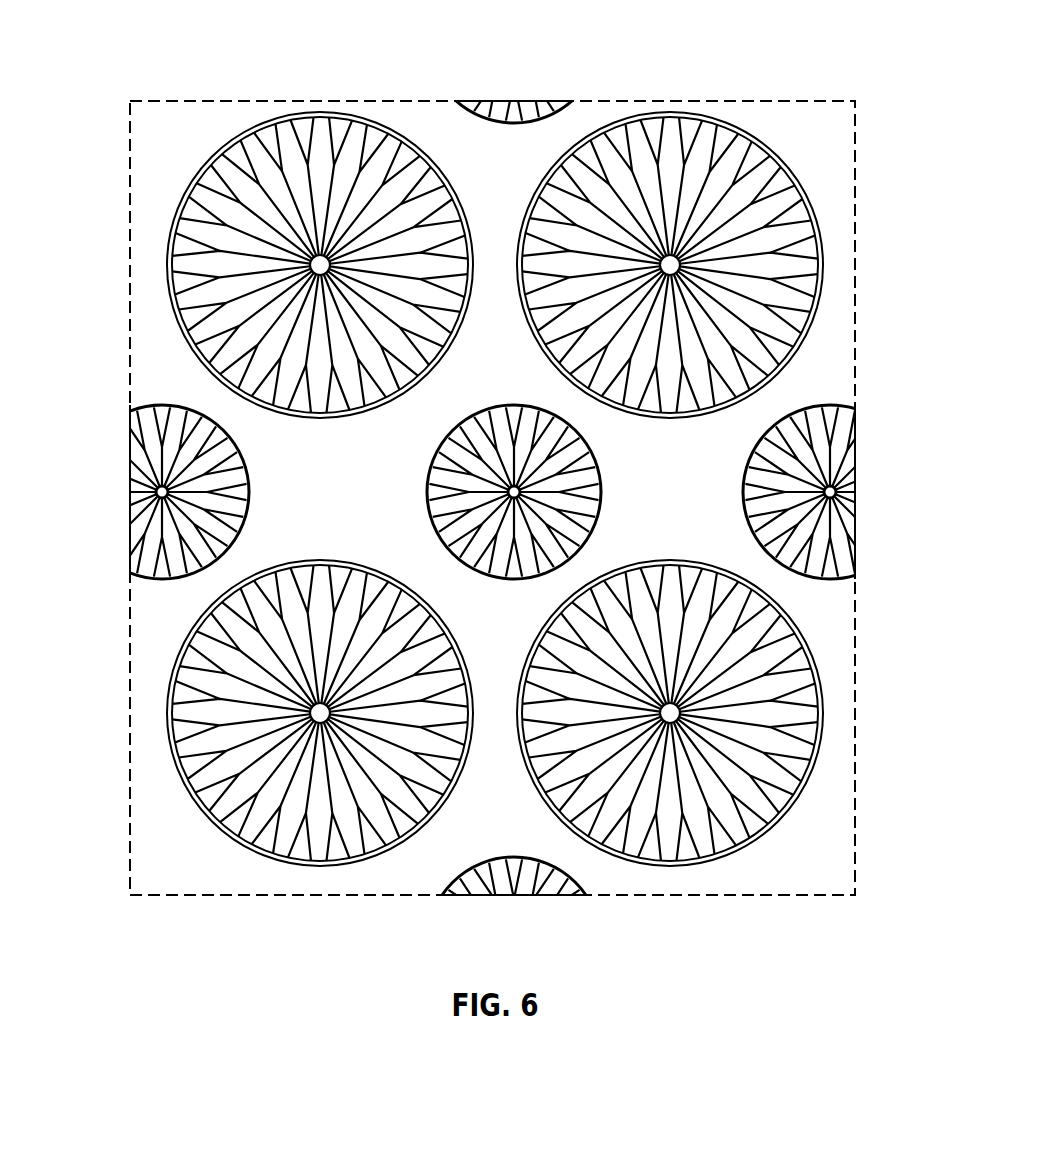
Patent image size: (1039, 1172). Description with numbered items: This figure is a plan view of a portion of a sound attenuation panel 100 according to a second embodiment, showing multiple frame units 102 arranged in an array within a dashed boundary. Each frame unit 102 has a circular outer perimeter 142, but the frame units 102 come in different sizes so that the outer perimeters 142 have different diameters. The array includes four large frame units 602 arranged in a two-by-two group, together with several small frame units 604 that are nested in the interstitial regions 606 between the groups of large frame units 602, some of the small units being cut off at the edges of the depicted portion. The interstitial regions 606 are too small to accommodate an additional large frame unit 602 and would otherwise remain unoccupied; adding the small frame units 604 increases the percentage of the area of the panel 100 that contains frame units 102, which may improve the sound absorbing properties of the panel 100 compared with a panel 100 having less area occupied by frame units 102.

The sound attenuation panel 100 is at (190, 82).
The frame unit 102 is at (253, 130).
The circular outer perimeter 142 is at (377, 122).
The large frame unit 602 is at (393, 132).
The small frame unit 604 is at (815, 405).
The interstitial region 606 is at (493, 387).